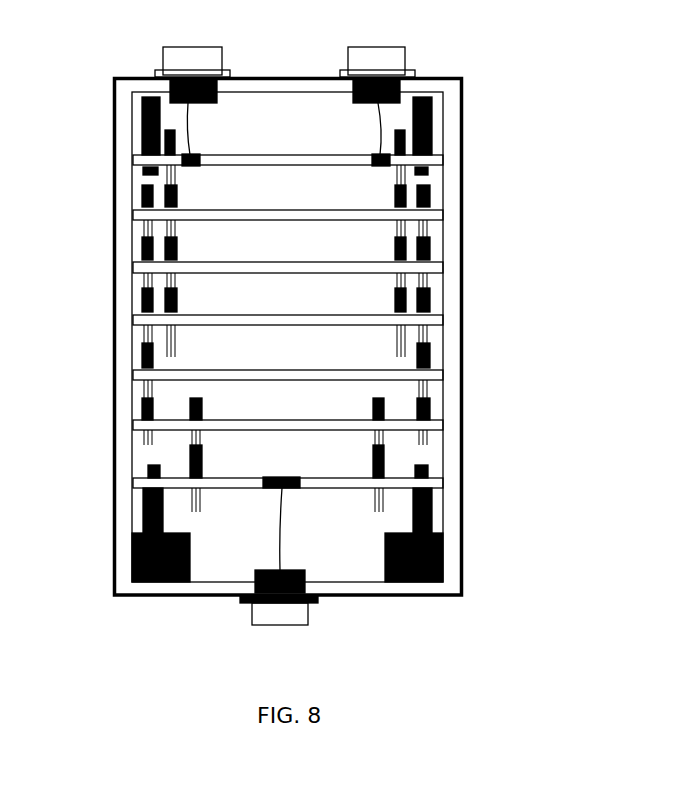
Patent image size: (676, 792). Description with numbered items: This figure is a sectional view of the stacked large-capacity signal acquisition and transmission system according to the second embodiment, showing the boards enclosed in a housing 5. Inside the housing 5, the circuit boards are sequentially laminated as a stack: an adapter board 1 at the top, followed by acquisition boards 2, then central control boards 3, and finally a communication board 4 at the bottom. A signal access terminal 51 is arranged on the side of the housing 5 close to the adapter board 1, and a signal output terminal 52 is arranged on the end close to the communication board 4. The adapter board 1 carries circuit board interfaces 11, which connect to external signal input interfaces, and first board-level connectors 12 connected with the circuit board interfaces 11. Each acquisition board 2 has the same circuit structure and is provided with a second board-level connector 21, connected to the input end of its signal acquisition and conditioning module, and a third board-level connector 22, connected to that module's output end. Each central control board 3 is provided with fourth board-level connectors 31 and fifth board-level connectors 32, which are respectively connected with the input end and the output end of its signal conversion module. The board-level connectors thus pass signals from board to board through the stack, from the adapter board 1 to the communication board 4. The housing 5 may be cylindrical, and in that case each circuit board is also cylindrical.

The adapter board 1 is at (430, 165).
The acquisition board 2 is at (430, 215).
The central control board 3 is at (430, 375).
The communication board 4 is at (430, 485).
The housing 5 is at (448, 538).
The signal access terminal 51 is at (383, 58).
The signal output terminal 52 is at (290, 615).
The circuit board interface 11 is at (185, 160).
The first board-level connector 12 is at (143, 135).
The second board-level connector 21 is at (148, 210).
The third board-level connector 22 is at (150, 193).
The fourth board-level connector 31 is at (147, 357).
The fifth board-level connector 32 is at (192, 408).